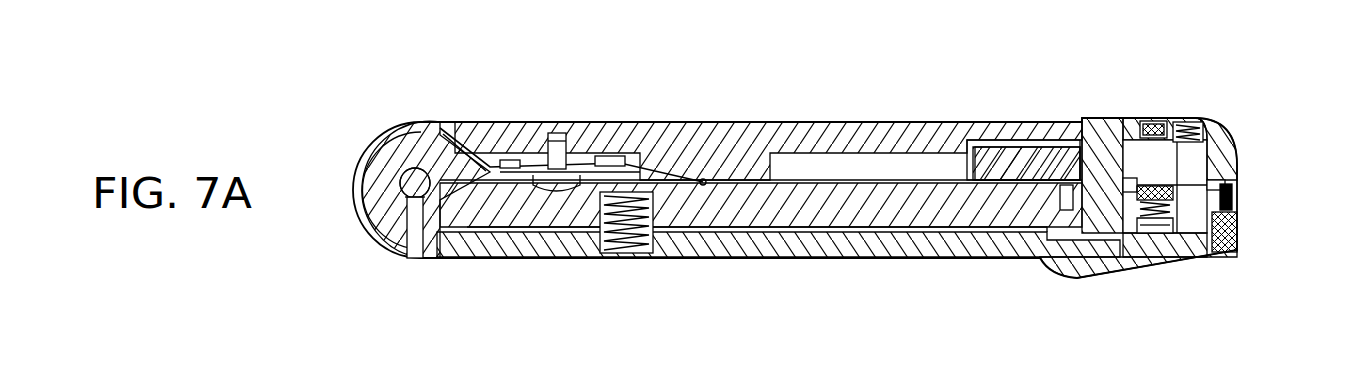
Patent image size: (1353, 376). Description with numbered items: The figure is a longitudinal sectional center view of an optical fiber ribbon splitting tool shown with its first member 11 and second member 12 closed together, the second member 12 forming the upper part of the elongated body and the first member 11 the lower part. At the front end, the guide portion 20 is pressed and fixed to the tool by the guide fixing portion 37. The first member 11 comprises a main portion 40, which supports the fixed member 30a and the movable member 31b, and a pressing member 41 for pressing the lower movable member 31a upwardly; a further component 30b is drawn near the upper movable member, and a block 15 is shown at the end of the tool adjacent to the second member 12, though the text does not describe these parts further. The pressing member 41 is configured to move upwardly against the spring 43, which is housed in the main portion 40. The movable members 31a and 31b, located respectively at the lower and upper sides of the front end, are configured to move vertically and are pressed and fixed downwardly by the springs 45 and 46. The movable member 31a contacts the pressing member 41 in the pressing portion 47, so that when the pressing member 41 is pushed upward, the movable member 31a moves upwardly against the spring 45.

The first member 11 is at (907, 315).
The second member 12 is at (922, 135).
The end block 15 is at (1128, 128).
The guide portion 20 is at (1227, 182).
The fixed member 30a is at (1105, 262).
The upper member 30b is at (1143, 121).
The movable member 31a is at (1205, 258).
The movable member 31b is at (1237, 153).
The guide fixing portion 37 is at (1234, 198).
The main portion 40 is at (870, 212).
The pressing member 41 is at (817, 245).
The spring 43 is at (598, 258).
The spring 45 is at (1194, 120).
The spring 46 is at (1145, 262).
The pressing portion 47 is at (1165, 255).